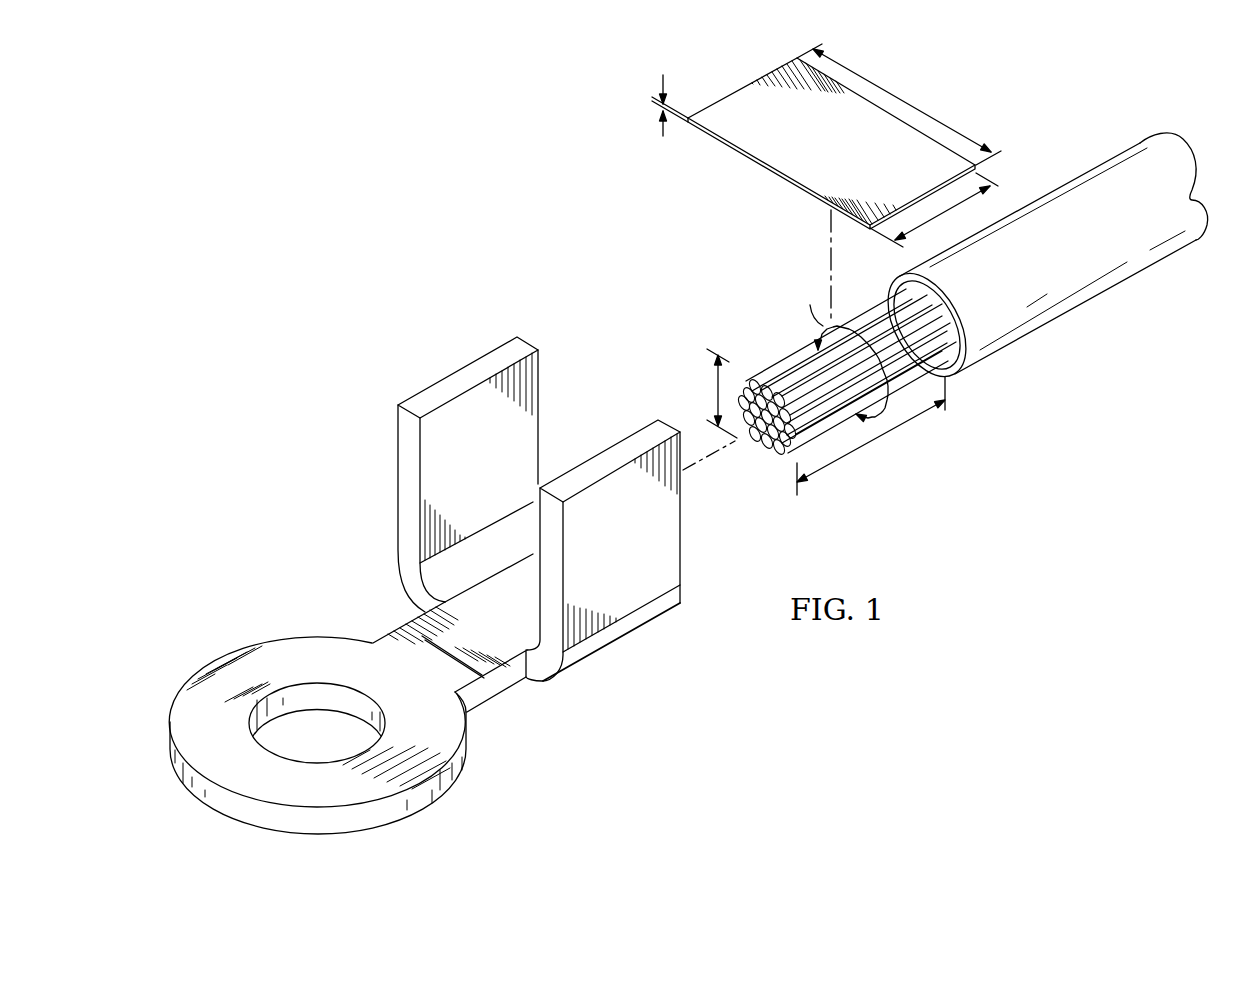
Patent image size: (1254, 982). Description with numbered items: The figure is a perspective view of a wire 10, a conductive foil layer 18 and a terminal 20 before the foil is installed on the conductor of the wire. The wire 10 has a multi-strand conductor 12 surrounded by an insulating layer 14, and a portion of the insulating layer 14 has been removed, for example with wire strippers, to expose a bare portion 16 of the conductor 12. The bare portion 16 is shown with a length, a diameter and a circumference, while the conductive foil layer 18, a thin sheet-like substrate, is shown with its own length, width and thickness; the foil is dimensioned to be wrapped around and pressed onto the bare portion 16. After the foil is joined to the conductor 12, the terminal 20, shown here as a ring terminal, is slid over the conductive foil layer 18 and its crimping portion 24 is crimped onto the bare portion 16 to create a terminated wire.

The wire 10 is at (952, 314).
The conductor 12 is at (764, 376).
The insulating layer 14 is at (1080, 307).
The bare portion 16 is at (827, 380).
The conductive foil layer 18 is at (737, 96).
The terminal 20 is at (258, 652).
The crimping portion 24 is at (628, 646).